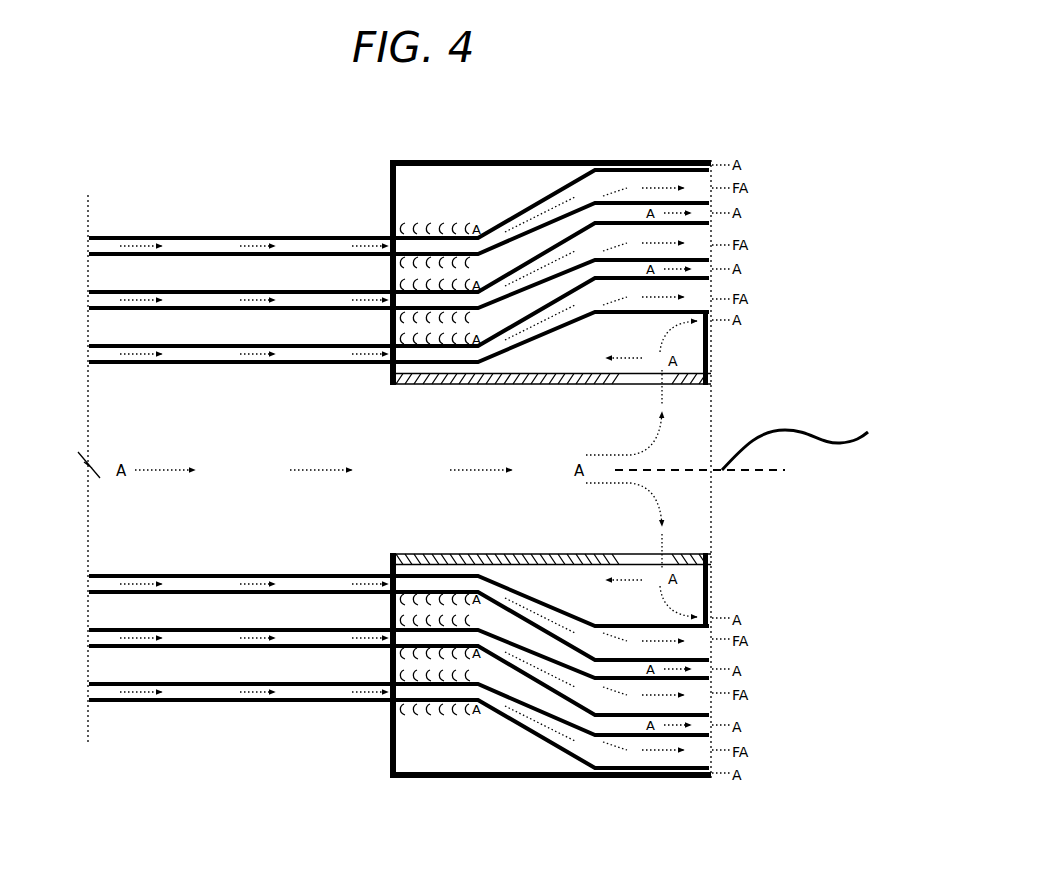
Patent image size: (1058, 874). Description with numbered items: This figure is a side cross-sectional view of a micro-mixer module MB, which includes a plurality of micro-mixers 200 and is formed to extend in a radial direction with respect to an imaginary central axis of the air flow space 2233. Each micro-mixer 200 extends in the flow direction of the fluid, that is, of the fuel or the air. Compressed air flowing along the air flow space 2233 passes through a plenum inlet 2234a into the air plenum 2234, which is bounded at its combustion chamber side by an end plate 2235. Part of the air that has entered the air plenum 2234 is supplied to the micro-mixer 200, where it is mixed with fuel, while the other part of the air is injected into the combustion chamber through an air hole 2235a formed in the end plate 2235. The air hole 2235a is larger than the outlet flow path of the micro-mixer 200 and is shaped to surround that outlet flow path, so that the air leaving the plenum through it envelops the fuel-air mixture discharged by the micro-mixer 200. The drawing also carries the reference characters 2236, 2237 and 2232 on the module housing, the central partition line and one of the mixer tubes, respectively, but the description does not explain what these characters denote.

The micro-mixer module MB is at (236, 124).
The housing 2236 is at (392, 178).
The micro-mixer 200 is at (452, 413).
The air plenum 2234 is at (513, 190).
The end plate 2235 is at (713, 350).
The air hole 2235a is at (712, 161).
The plenum inlet 2234a is at (670, 386).
The partition line 2237 is at (771, 443).
The air flow space 2233 is at (147, 430).
The tube 2232 is at (176, 590).